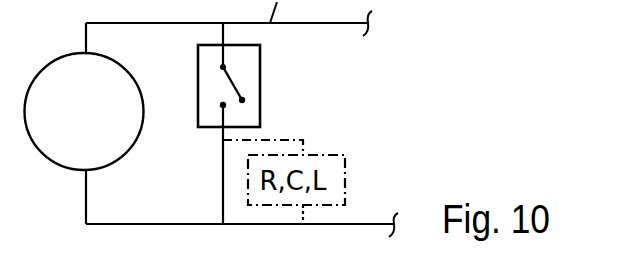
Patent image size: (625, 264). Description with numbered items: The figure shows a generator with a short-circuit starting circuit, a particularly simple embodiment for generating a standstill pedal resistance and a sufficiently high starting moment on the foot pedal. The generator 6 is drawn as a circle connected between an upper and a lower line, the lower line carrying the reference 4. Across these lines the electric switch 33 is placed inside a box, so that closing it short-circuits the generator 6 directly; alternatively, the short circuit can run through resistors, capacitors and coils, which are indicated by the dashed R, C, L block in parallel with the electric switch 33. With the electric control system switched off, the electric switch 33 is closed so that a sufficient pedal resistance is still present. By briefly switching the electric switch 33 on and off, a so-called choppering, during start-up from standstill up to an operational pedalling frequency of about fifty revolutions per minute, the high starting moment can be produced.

The generator 6 is at (84, 111).
The supply line 4 is at (148, 224).
The electric switch 33 is at (263, 72).